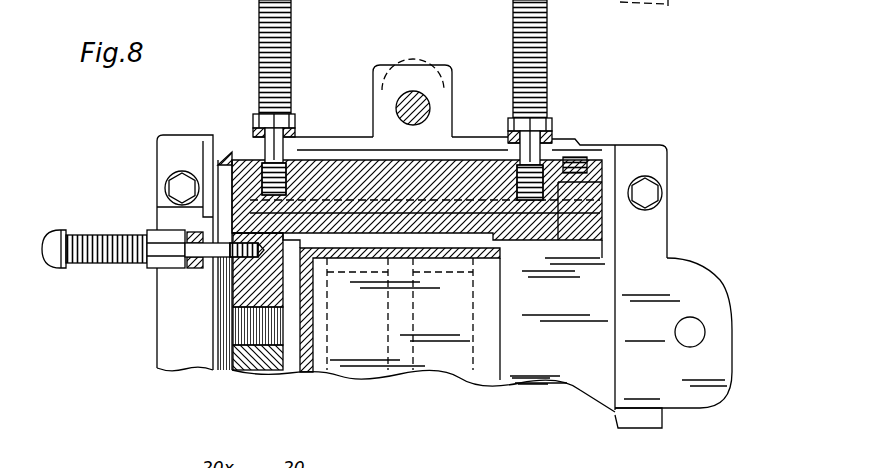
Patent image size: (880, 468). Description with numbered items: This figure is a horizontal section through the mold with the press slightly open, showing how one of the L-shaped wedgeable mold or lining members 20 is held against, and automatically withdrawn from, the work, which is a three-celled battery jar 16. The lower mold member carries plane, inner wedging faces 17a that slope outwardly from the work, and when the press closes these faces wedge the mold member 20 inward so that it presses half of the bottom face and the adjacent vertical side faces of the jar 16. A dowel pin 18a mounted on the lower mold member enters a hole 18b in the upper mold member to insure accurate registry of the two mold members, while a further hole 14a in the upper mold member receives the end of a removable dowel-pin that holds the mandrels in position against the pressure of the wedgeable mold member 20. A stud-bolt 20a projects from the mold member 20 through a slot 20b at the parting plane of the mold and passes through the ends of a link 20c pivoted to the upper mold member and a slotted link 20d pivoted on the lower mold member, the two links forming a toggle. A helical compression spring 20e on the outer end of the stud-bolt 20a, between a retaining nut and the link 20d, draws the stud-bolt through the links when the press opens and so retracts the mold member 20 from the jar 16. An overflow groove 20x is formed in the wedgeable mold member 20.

The hole 14a is at (695, 322).
The three-celled battery jar 16 is at (297, 358).
The wedging face 17a is at (473, 160).
The dowel pin 18a is at (430, 110).
The hole 18b is at (413, 105).
The wedgeable mold member 20 is at (335, 180).
The stud-bolt 20a is at (270, 145).
The slot 20b is at (295, 147).
The link 20c is at (290, 140).
The link 20d is at (253, 114).
The helical compression spring 20e is at (290, 32).
The overflow groove 20x is at (513, 283).